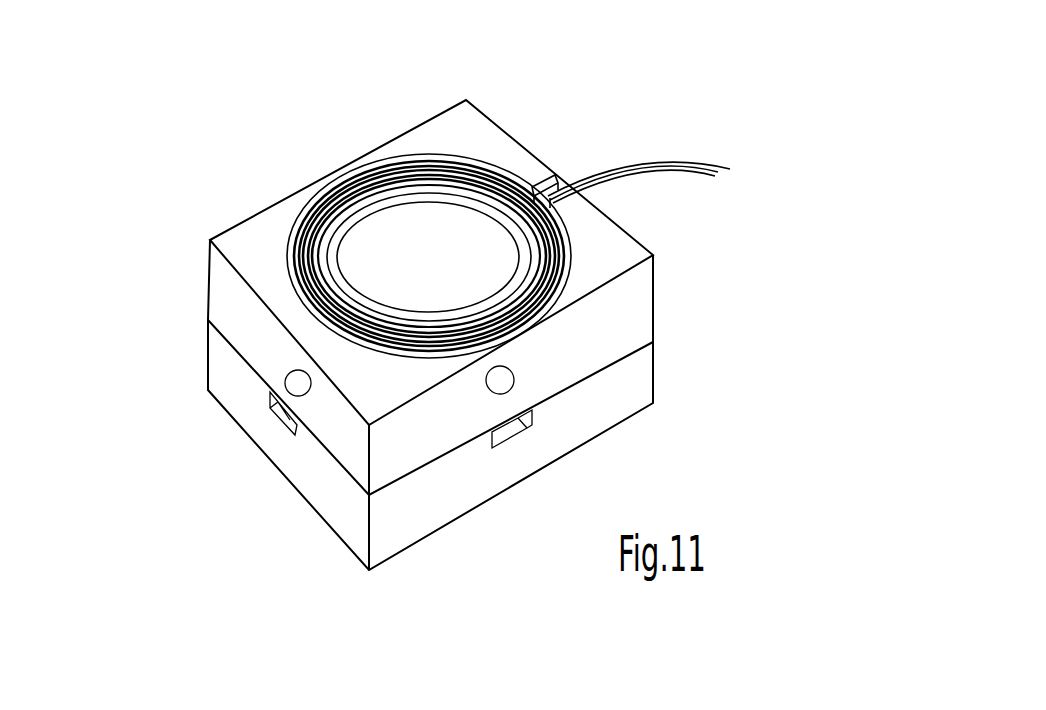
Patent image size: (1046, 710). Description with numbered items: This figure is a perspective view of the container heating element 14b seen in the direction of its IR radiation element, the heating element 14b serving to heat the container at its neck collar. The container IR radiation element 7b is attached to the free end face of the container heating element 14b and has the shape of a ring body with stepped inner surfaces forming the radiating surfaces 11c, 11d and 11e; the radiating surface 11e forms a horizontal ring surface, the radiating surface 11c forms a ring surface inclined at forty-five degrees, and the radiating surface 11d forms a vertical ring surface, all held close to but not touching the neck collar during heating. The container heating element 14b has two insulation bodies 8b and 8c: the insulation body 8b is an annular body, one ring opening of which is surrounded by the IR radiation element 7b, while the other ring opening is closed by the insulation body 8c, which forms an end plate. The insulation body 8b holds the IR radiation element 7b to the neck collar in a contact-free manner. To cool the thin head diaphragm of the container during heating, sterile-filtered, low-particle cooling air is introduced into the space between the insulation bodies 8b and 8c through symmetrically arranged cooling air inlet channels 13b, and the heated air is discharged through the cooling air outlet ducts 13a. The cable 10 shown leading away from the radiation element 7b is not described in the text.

The container heating element 14b is at (220, 203).
The insulation body 8b is at (633, 312).
The insulation body 8c is at (637, 378).
The cooling air inlet channels 13b is at (292, 376).
The cooling air outlet ducts 13a is at (287, 420).
The radiating surface 11d is at (327, 203).
The radiating surface 11c is at (370, 205).
The radiating surface 11e is at (335, 252).
The container IR radiation element 7b is at (472, 178).
The cable 10 is at (675, 160).